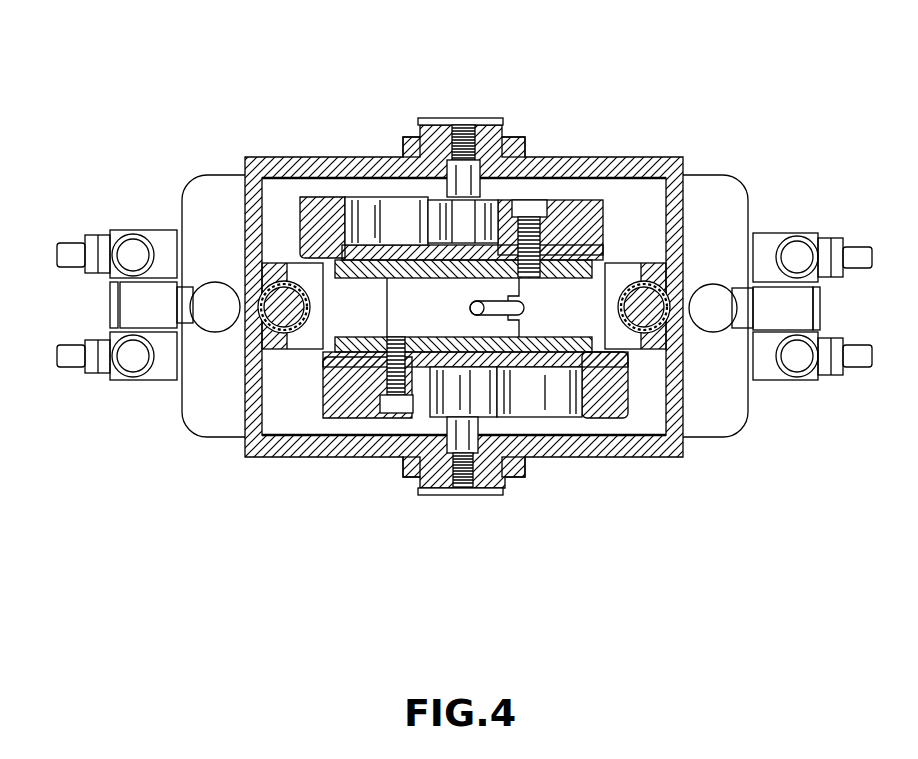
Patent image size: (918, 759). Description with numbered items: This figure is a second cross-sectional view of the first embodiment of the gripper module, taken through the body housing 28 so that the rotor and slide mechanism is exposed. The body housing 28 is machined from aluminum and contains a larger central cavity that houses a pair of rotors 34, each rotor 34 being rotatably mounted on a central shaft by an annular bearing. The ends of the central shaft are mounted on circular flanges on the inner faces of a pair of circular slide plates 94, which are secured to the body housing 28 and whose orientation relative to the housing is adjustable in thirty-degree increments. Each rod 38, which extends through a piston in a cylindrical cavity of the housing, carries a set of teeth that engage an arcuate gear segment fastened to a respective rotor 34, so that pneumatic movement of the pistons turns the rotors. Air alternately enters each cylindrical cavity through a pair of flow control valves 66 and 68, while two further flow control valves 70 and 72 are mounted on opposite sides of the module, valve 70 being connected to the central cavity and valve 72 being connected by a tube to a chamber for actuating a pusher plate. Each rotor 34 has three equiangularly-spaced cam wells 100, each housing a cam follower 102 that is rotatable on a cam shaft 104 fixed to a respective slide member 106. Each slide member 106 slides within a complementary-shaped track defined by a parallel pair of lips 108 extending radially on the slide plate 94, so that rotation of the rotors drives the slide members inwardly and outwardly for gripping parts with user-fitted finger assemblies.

The body housing 28 is at (218, 185).
The rotor 34 is at (312, 200).
The rod 38 is at (675, 272).
The flow control valve 66 is at (165, 372).
The flow control valve 68 is at (128, 293).
The flow control valve 70 is at (163, 235).
The flow control valve 72 is at (768, 235).
The slide plate 94 is at (650, 160).
The cam well 100 is at (373, 203).
The cam follower 102 is at (470, 176).
The cam shaft 104 is at (463, 218).
The slide member 106 is at (505, 120).
The lip 108 is at (410, 150).